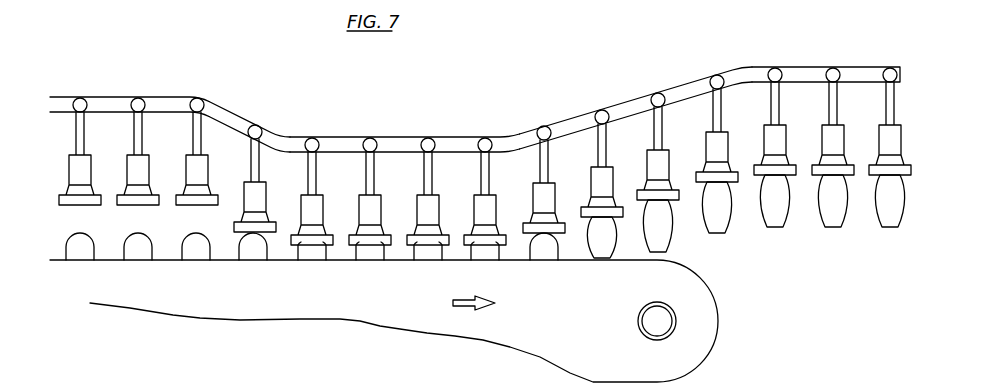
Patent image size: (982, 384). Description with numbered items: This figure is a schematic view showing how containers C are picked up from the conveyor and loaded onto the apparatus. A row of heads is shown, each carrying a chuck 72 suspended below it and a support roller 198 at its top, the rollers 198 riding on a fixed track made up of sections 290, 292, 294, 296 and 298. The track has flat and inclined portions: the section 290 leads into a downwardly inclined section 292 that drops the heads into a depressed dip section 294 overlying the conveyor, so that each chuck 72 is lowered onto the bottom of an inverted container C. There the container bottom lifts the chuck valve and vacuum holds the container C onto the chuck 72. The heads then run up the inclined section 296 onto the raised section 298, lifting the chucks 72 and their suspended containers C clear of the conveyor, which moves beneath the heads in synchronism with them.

The support roller 198 is at (81, 98).
The rail section 290 is at (158, 97).
The inclined rail section 292 is at (237, 121).
The rail section 294 is at (342, 142).
The inclined rail section 296 is at (579, 118).
The rail section 298 is at (862, 67).
The chuck 72 is at (190, 168).
The container cup C is at (130, 262).